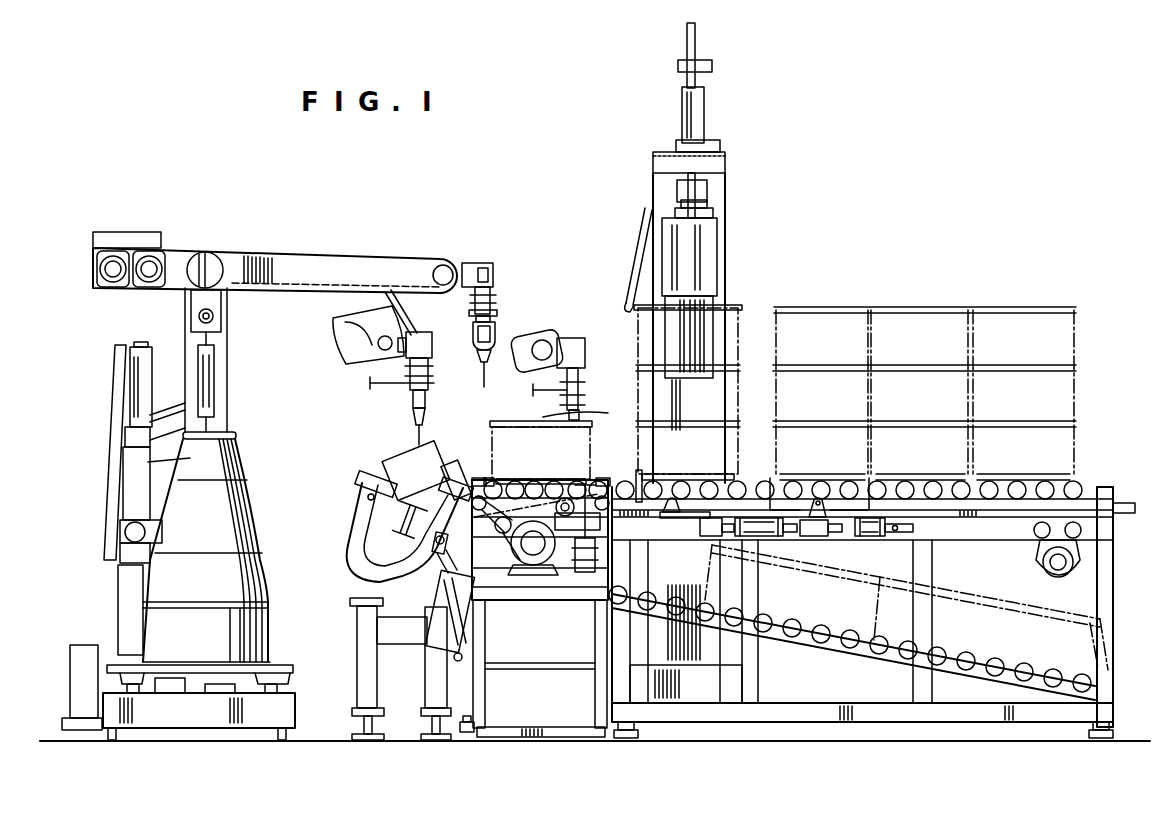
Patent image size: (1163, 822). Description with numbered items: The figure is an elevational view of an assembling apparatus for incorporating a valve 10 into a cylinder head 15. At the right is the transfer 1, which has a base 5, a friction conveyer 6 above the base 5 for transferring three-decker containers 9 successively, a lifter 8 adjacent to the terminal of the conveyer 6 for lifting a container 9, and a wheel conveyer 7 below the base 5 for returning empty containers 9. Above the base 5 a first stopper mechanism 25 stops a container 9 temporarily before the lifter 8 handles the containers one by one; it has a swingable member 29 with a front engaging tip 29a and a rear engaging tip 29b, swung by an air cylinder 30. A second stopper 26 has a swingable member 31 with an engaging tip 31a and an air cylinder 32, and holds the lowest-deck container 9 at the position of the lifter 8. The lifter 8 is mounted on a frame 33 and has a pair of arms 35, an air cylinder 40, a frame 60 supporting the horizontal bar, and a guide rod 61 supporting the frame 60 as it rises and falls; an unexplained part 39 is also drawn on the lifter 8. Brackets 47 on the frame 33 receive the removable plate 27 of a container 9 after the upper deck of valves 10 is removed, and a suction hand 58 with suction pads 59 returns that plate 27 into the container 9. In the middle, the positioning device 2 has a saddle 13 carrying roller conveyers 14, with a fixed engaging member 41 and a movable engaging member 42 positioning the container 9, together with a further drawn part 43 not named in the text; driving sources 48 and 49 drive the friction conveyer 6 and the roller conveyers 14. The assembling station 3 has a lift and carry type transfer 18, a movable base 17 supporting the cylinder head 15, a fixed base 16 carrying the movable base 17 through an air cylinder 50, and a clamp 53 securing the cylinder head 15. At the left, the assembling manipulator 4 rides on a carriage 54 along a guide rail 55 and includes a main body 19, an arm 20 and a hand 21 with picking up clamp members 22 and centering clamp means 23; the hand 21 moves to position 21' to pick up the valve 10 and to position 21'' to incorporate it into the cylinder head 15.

The transfer 1 is at (1116, 500).
The positioning device 2 is at (476, 712).
The assembling station 3 is at (347, 628).
The assembling manipulator 4 is at (258, 522).
The base 5 is at (1113, 586).
The friction conveyer 6 is at (1088, 478).
The wheel conveyer 7 is at (975, 640).
The lifter 8 is at (718, 243).
The containers 9 is at (832, 312).
The valve 10 is at (485, 387).
The saddle 13 is at (540, 600).
The roller conveyers 14 is at (556, 490).
The cylinder head 15 is at (395, 460).
The fixed base 16 is at (425, 690).
The movable base 17 is at (364, 483).
The lift and carry type transfer 18 is at (403, 522).
The main body 19 is at (245, 463).
The arm 20 is at (292, 256).
The hand 21 is at (504, 300).
The hand position for picking up 21' is at (559, 359).
The hand position for incorporating 21'' is at (432, 367).
The picking up clamp members 22 is at (497, 345).
The centering clamp means 23 is at (533, 390).
The first stopper mechanism 25 is at (842, 536).
The second stopper 26 is at (708, 540).
The removable plate 27 is at (640, 240).
The swingable member 29 is at (814, 522).
The front engaging tip 29a is at (771, 478).
The rear engaging tip 29b is at (872, 478).
The air cylinder 30 is at (870, 532).
The swingable member 31 is at (672, 520).
The engaging tip 31a is at (638, 470).
The air cylinder 32 is at (755, 538).
The frame 33 is at (722, 156).
The arms 35 is at (716, 330).
The valve collar 39 is at (708, 195).
The air cylinder 40 is at (700, 110).
The fixed engaging member 41 is at (485, 480).
The movable engaging member 42 is at (612, 462).
The lift cylinder 43 is at (580, 572).
The brackets 47 is at (628, 290).
The driving source 48 is at (1055, 578).
The driving source 49 is at (527, 566).
The air cylinder 50 is at (448, 640).
The clamp 53 is at (455, 468).
The carriage 54 is at (268, 650).
The guide rail 55 is at (318, 703).
The suction hand 58 is at (440, 263).
The suction pads 59 is at (338, 320).
The frame 60 is at (713, 278).
The guide rod 61 is at (680, 190).